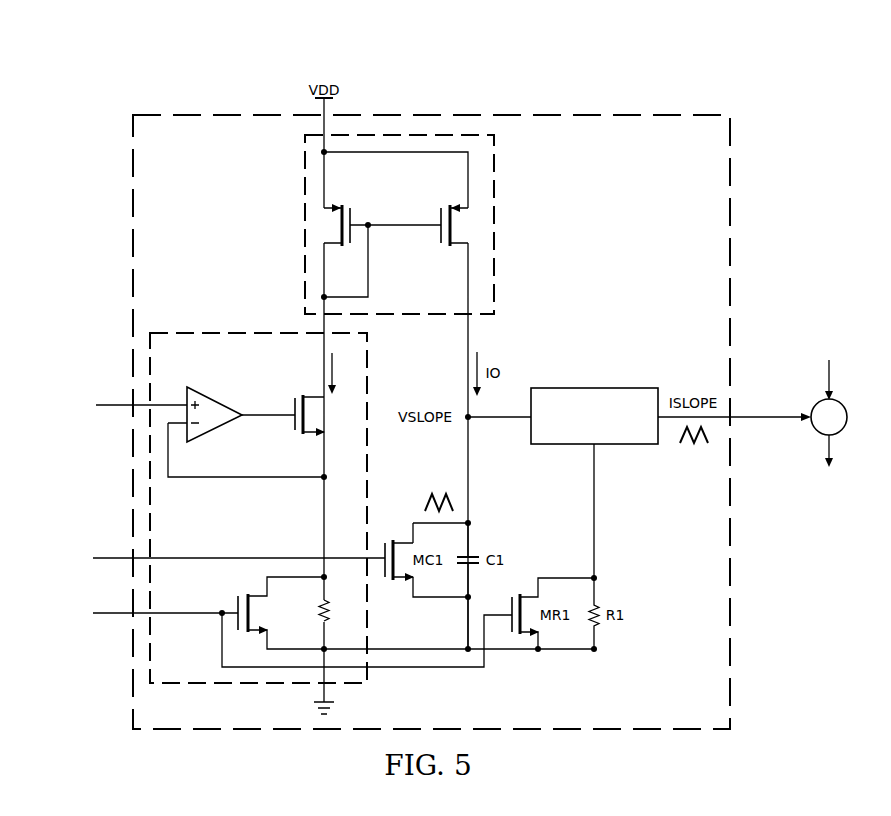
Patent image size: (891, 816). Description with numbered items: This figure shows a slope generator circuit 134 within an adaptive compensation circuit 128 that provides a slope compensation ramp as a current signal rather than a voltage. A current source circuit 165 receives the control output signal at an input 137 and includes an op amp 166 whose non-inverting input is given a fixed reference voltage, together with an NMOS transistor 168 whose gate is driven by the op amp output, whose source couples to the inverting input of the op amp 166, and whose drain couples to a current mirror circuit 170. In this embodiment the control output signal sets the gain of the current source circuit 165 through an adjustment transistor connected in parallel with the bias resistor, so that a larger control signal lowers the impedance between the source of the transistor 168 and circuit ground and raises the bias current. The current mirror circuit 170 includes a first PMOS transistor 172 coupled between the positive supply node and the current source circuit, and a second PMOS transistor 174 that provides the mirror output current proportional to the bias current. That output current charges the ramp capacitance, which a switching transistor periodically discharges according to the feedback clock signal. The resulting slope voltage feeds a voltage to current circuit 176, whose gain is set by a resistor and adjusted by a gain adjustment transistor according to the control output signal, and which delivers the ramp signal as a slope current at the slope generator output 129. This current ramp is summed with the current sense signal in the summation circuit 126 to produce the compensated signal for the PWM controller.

The adaptive compensation circuit 128 is at (147, 72).
The slope generator circuit 134 is at (605, 267).
The current source circuit 165 is at (213, 328).
The op amp 166 is at (214, 397).
The NMOS transistor 168 is at (293, 427).
The current mirror circuit 170 is at (299, 266).
The first PMOS transistor 172 is at (356, 217).
The transistor 174 is at (438, 237).
The voltage to current circuit 176 is at (603, 387).
The summation circuit 126 is at (846, 405).
The slope generator output 129 is at (767, 423).
The input 137 is at (112, 616).